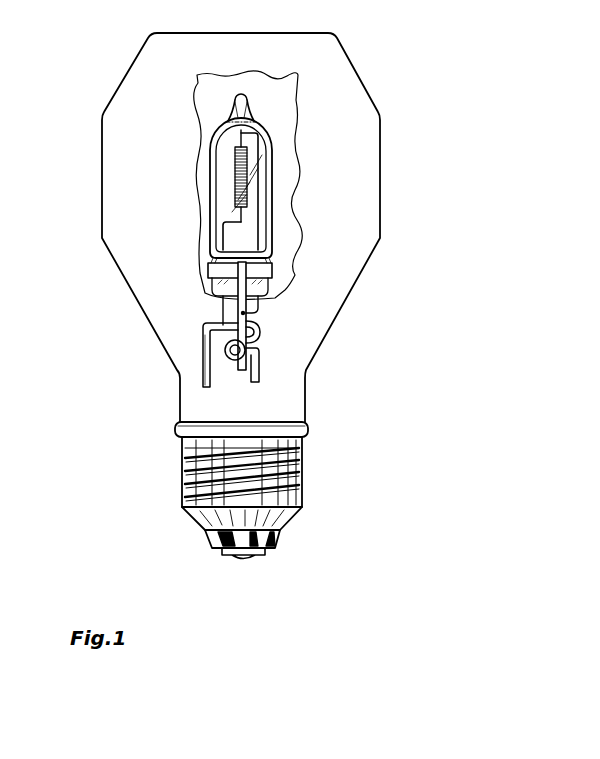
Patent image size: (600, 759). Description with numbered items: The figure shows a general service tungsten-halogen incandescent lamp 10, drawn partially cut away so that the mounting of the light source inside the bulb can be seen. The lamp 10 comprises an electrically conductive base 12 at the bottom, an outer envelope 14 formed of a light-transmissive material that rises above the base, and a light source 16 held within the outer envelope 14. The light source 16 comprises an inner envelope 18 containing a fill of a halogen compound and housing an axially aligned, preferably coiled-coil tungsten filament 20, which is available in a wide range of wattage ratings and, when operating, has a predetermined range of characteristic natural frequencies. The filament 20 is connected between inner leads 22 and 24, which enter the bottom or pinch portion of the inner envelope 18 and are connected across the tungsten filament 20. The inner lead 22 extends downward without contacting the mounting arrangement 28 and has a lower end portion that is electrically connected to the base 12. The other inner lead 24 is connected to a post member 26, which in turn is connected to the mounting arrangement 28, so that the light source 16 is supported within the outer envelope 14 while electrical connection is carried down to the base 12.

The tungsten-halogen incandescent lamp 10 is at (443, 78).
The base 12 is at (302, 478).
The outer envelope 14 is at (380, 203).
The light source 16 is at (207, 169).
The inner envelope 18 is at (267, 122).
The tungsten filament 20 is at (238, 181).
The inner lead 22 is at (220, 318).
The inner lead 24 is at (268, 307).
The post member 26 is at (245, 363).
The mounting arrangement 28 is at (260, 340).